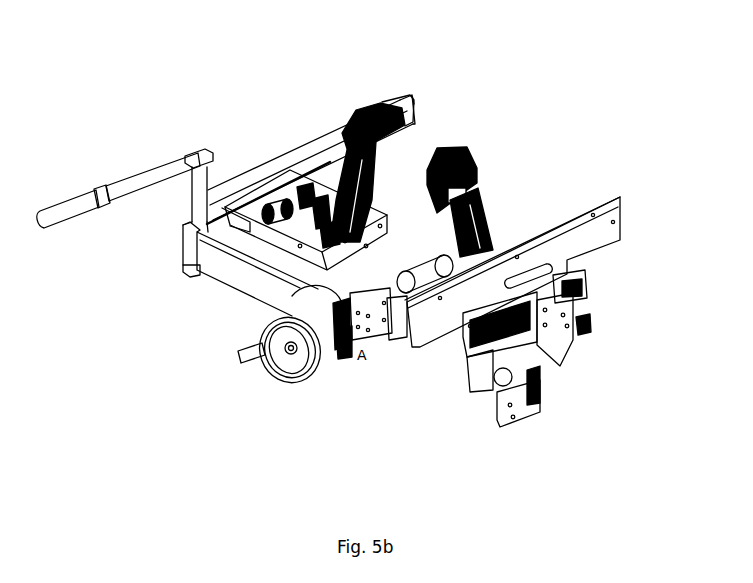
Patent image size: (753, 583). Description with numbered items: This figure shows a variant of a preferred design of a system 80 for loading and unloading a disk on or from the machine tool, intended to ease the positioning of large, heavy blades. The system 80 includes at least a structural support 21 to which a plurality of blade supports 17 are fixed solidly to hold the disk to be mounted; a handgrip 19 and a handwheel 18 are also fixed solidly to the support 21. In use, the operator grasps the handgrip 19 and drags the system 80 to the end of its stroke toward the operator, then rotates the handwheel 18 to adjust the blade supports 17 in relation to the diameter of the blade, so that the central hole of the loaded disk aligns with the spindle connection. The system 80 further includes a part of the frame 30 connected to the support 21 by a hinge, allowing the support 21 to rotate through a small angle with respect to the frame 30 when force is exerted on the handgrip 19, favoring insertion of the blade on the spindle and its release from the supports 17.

The system for loading and unloading the disk 80 is at (240, 93).
The handgrip 19 is at (62, 198).
The blade supports 17 is at (468, 150).
The support 21 is at (600, 248).
The frame 30 is at (553, 352).
The handwheel 18 is at (281, 380).